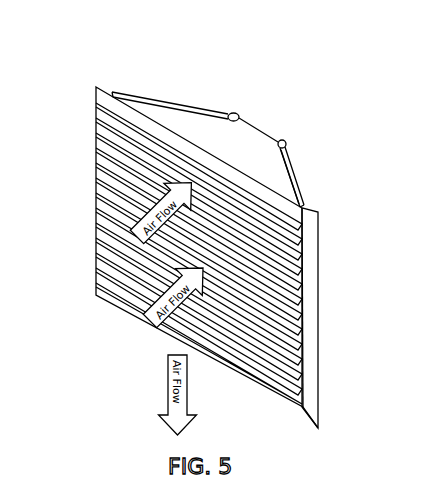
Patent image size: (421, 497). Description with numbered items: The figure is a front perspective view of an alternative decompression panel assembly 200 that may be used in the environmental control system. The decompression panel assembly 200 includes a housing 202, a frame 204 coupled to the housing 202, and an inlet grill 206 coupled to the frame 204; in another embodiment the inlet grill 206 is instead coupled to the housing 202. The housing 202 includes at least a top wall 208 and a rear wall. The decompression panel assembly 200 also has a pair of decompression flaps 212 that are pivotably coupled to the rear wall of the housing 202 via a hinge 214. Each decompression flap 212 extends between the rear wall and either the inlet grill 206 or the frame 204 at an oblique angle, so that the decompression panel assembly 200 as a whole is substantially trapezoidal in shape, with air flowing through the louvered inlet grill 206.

The decompression panel assembly 200 is at (112, 62).
The housing 202 is at (270, 172).
The frame 204 is at (312, 247).
The inlet grill 206 is at (107, 230).
The top wall 208 is at (212, 124).
The decompression flap 212 is at (160, 103).
The hinge 214 is at (241, 116).